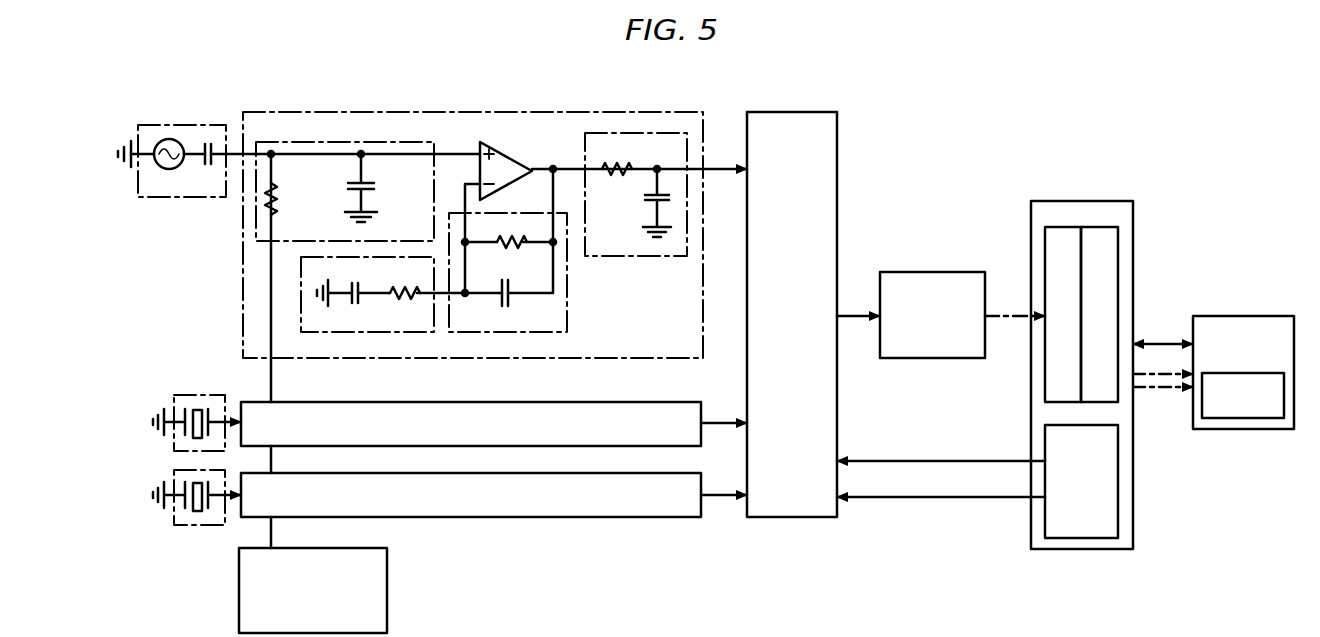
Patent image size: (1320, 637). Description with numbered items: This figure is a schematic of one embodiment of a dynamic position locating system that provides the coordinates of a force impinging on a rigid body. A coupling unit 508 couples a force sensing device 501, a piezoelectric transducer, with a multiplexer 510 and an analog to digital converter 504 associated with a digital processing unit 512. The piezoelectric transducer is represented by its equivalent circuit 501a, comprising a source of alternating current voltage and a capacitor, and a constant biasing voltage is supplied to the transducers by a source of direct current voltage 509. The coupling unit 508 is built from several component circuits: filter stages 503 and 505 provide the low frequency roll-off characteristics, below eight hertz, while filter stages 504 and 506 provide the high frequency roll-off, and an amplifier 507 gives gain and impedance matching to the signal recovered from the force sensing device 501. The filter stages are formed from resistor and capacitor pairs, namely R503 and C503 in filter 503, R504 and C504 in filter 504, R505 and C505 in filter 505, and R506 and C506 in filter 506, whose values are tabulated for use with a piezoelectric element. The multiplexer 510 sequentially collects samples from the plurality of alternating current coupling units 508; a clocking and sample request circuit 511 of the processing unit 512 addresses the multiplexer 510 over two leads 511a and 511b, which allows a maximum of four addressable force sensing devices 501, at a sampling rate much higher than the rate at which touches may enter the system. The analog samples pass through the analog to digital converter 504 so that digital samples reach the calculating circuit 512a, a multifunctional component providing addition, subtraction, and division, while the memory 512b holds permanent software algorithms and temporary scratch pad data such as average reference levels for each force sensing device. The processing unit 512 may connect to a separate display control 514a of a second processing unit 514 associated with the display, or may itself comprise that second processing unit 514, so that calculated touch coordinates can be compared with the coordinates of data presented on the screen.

The equivalent circuit 501a is at (178, 124).
The force sensing device 501 is at (211, 394).
The filter stage 503 is at (345, 178).
The resistor of filter 503 R503 is at (291, 199).
The capacitor of filter 503 C503 is at (375, 183).
The filter stage / analog to digital converter 504 is at (747, 263).
The resistor of filter 504 R504 is at (510, 255).
The capacitor of filter 504 C504 is at (510, 304).
The filter stage 505 is at (383, 304).
The resistor of filter 505 R505 is at (405, 276).
The capacitor of filter 505 C505 is at (395, 348).
The filter stage 506 is at (636, 240).
The resistor of filter 506 R506 is at (618, 154).
The capacitor of filter 506 C506 is at (638, 201).
The amplifier 507 is at (518, 132).
The coupling unit 508 is at (503, 112).
The source of direct current voltage 509 is at (387, 606).
The multiplexer 510 is at (783, 517).
The clocking and sample request circuit 511 is at (1118, 520).
The lead 511a is at (908, 461).
The lead 511b is at (910, 497).
The processing unit 512 is at (1096, 356).
The calculating circuit 512a is at (1060, 227).
The memory 512b is at (1105, 227).
The second processing unit 514 is at (1245, 316).
The display control 514a is at (1245, 418).